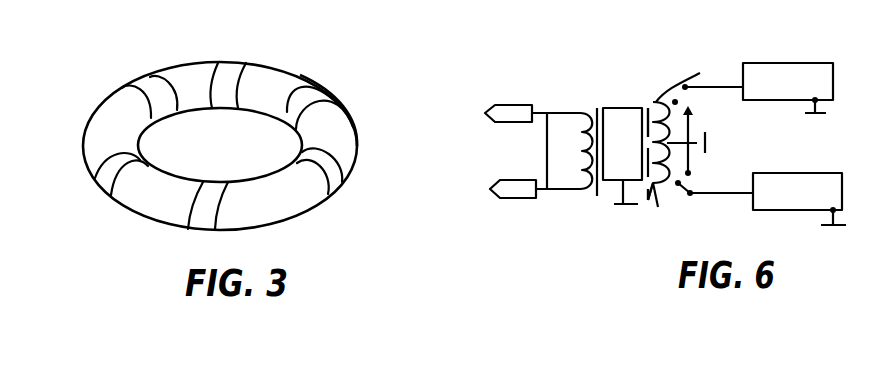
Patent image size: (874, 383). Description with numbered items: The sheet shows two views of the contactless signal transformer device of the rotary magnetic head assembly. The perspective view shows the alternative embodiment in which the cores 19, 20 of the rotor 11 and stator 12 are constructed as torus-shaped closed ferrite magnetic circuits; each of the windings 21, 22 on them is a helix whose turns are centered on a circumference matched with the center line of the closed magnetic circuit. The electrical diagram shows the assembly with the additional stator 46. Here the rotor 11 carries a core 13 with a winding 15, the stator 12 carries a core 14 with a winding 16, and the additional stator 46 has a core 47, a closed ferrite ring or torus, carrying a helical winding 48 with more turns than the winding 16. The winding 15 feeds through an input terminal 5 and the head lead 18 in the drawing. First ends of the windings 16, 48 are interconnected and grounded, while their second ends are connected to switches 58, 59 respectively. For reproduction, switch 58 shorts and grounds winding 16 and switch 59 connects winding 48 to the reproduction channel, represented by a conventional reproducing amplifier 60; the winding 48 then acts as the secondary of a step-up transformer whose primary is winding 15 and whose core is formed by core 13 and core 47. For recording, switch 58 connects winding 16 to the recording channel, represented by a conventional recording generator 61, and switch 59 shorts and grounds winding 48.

In FIG. 6, the input terminals 5 is at (513, 110).
In FIG. 3, the rotor 11 is at (205, 128).
In FIG. 6, the rotor 11 is at (587, 195).
In FIG. 3, the stator 12 is at (96, 98).
In FIG. 6, the stator 12 is at (659, 97).
In FIG. 6, the core 13 is at (598, 196).
In FIG. 6, the core 14 is at (650, 93).
In FIG. 6, the winding 15 is at (590, 112).
In FIG. 6, the winding 16 is at (699, 76).
In FIG. 6, the air gap 18 is at (624, 96).
In FIG. 3, the core 19 is at (360, 110).
In FIG. 3, the core 20 is at (336, 120).
In FIG. 3, the winding 21 is at (224, 122).
In FIG. 3, the winding 22 is at (230, 68).
In FIG. 6, the additional stator 46 is at (663, 199).
In FIG. 6, the core 47 is at (648, 200).
In FIG. 6, the winding 48 is at (658, 207).
In FIG. 6, the switch 58 is at (677, 102).
In FIG. 6, the switch 59 is at (693, 188).
In FIG. 6, the reproducing amplifier 60 is at (799, 199).
In FIG. 6, the recording generator 61 is at (788, 88).